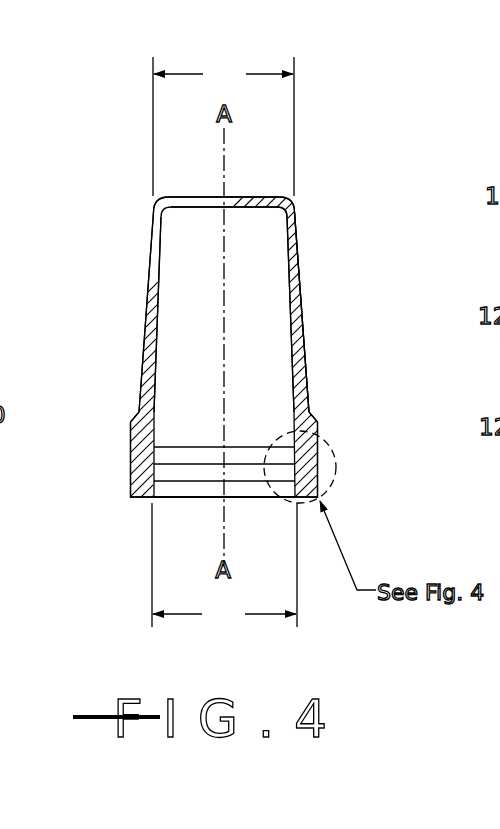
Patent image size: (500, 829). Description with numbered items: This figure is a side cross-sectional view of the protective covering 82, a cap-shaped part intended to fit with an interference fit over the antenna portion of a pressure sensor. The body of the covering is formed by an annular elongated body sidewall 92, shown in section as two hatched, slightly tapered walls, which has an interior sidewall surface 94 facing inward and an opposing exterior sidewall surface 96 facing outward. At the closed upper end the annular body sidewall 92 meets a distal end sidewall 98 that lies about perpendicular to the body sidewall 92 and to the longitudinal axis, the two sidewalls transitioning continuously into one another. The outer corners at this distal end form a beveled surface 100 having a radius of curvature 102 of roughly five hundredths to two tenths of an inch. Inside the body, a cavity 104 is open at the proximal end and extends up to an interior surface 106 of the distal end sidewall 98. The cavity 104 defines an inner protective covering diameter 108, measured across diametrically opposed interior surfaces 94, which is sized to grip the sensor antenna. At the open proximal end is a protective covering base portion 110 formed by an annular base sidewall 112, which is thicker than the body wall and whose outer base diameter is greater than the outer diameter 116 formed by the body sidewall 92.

The protective covering 82 is at (350, 184).
The annular elongated body sidewall 92 is at (305, 316).
The interior sidewall surface 94 is at (164, 375).
The exterior sidewall surface 96 is at (140, 290).
The distal end sidewall 98 is at (202, 196).
The beveled surface 100 is at (149, 205).
The radius of curvature 102 is at (280, 214).
The cavity 104 is at (188, 414).
The interior surface of the distal end sidewall 106 is at (202, 213).
The inner protective covering diameter 108 is at (224, 565).
The protective covering base portion 110 is at (130, 463).
The annular base sidewall 112 is at (318, 462).
The outer diameter 116 is at (223, 126).